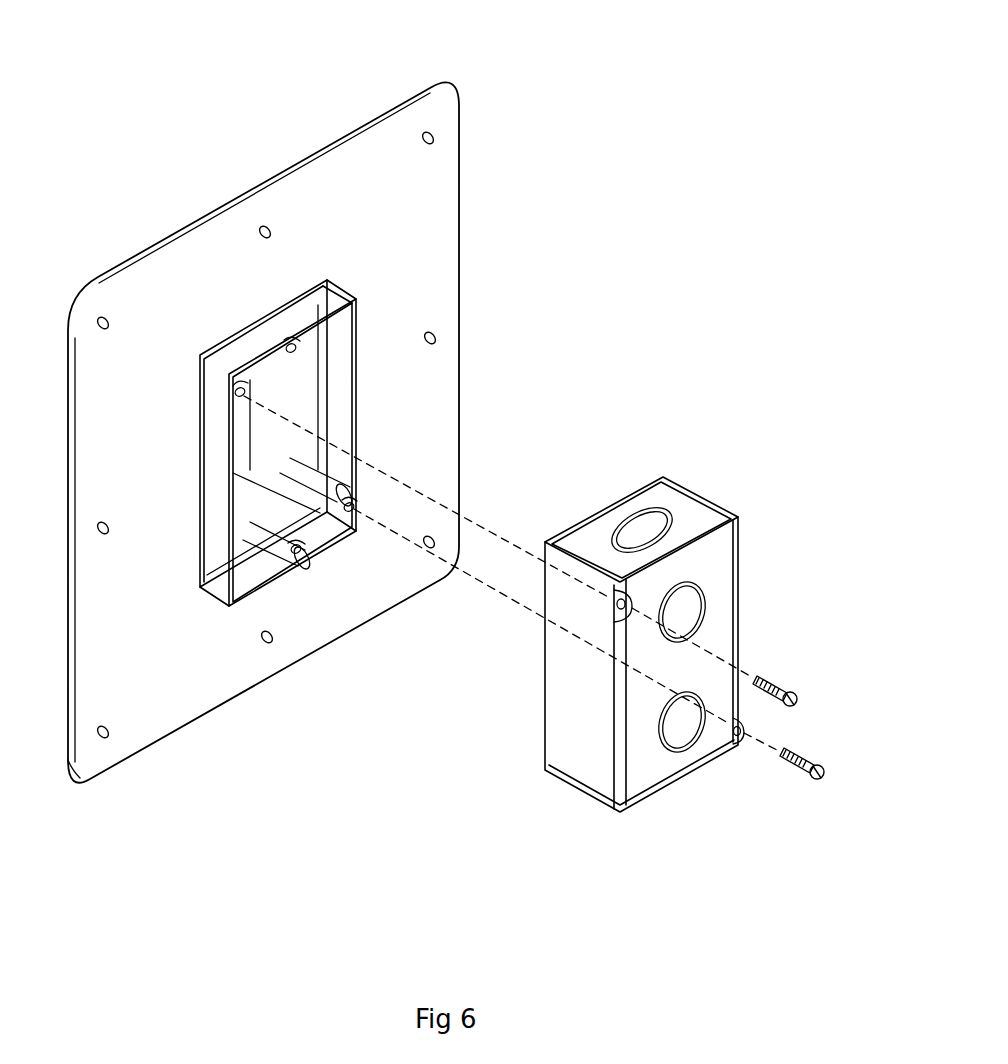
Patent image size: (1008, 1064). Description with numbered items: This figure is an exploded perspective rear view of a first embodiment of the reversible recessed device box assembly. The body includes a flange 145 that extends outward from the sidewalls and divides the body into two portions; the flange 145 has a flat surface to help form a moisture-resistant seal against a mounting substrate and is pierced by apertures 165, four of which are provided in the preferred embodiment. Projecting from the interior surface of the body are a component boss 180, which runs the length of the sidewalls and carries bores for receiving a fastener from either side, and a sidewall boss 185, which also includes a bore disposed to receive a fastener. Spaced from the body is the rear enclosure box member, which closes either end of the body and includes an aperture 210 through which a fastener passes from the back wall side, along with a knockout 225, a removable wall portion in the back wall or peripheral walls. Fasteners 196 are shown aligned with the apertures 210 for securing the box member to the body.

The flange 145 is at (388, 172).
The aperture 165 is at (106, 320).
The component boss 180 is at (280, 545).
The sidewall boss 185 is at (335, 493).
The screws 196 is at (810, 743).
The aperture 210 is at (618, 614).
The knockout 225 is at (648, 530).